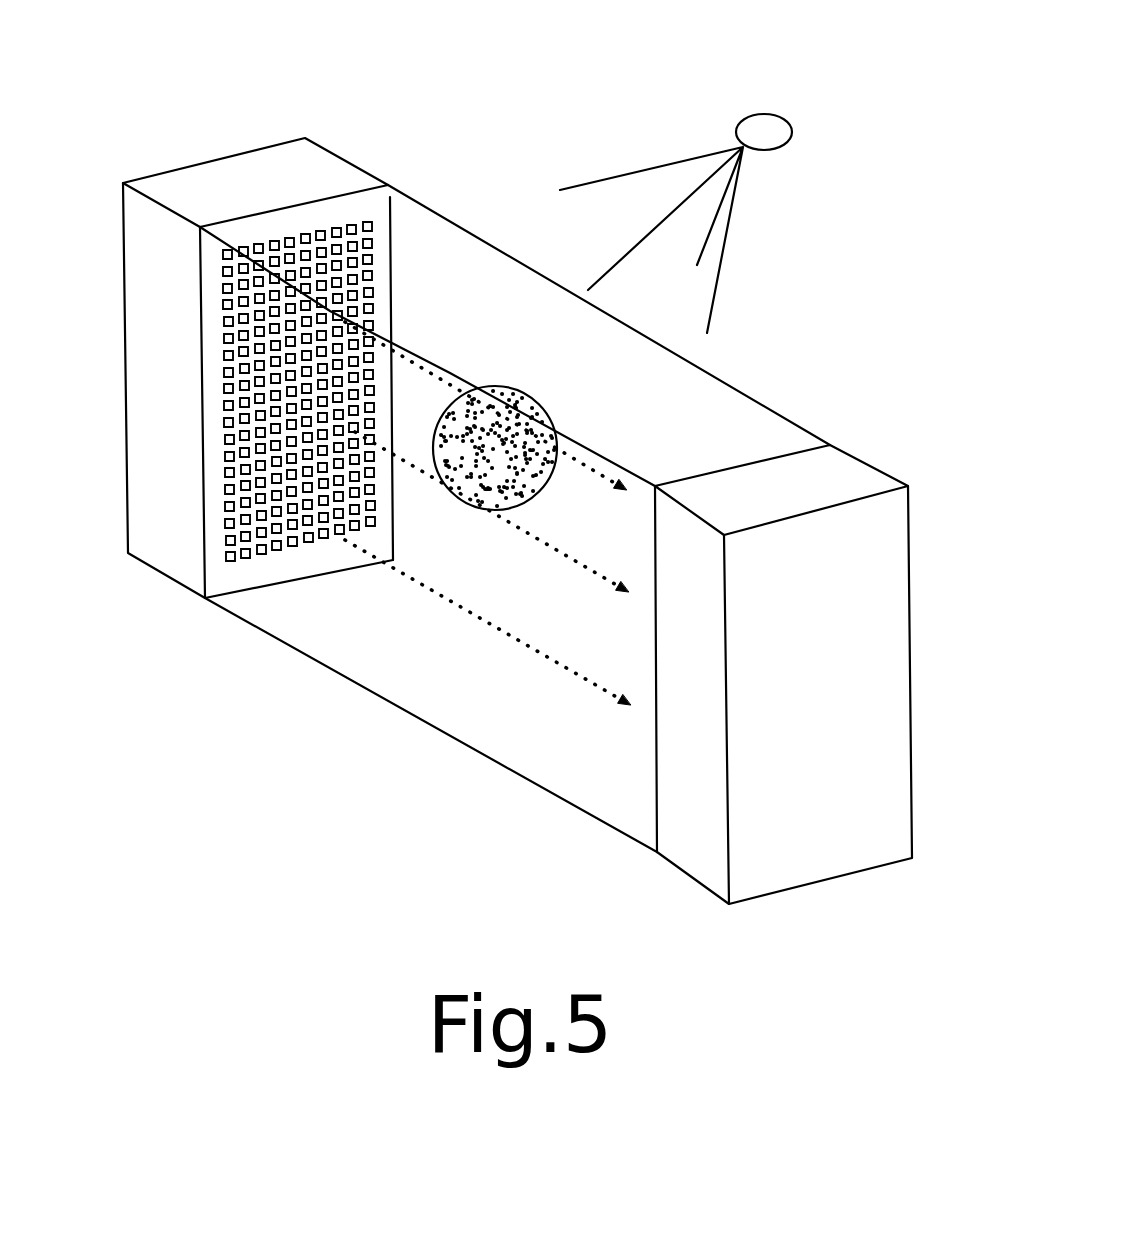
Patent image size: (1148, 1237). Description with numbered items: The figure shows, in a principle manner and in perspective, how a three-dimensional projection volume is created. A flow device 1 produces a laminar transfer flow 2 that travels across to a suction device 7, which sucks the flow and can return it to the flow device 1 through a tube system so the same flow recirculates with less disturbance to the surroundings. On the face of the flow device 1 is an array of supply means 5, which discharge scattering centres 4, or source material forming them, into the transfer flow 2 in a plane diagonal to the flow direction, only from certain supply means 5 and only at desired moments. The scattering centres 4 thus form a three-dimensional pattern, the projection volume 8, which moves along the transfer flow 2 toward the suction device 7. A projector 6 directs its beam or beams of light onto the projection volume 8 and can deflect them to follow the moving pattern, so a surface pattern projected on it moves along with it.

The flow device 1 is at (323, 160).
The transfer flow 2 is at (410, 220).
The scattering centres 4 is at (498, 477).
The supply means 5 is at (257, 248).
The projector 6 is at (765, 127).
The suction device 7 is at (833, 468).
The projection volume 8 is at (414, 566).